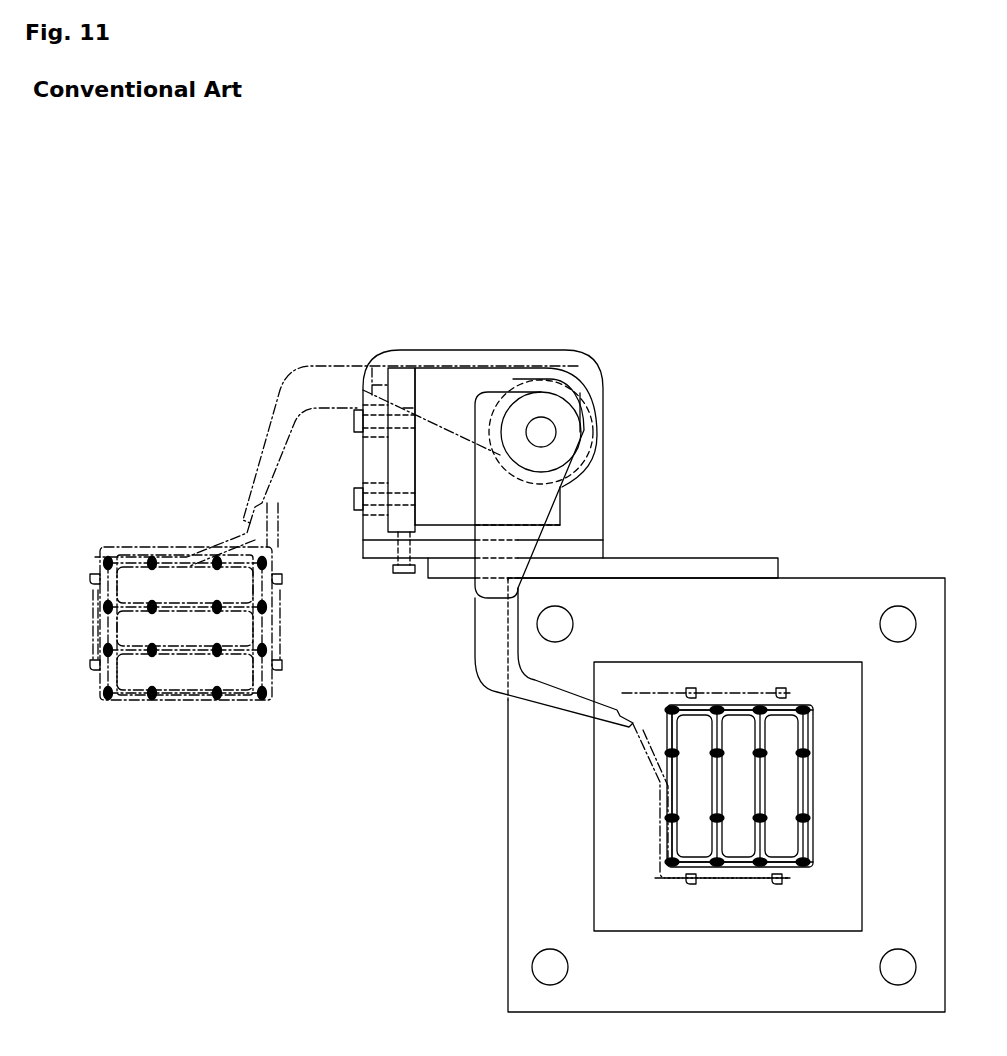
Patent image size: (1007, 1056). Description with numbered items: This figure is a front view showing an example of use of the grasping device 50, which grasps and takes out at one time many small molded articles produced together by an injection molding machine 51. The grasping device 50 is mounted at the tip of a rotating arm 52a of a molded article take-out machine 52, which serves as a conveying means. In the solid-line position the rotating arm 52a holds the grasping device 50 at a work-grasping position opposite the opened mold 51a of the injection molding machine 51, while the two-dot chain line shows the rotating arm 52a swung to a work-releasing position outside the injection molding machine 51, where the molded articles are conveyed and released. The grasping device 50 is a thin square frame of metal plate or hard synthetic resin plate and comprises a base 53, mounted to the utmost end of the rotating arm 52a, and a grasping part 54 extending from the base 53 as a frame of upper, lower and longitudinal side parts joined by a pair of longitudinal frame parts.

The grasping device 50 is at (813, 777).
The injection molding machine 51 is at (833, 574).
The opened mold 51a is at (862, 764).
The molded article take-out machine 52 is at (472, 349).
The rotating arm 52a is at (305, 370).
The base 53 is at (637, 714).
The grasping part 54 is at (809, 799).